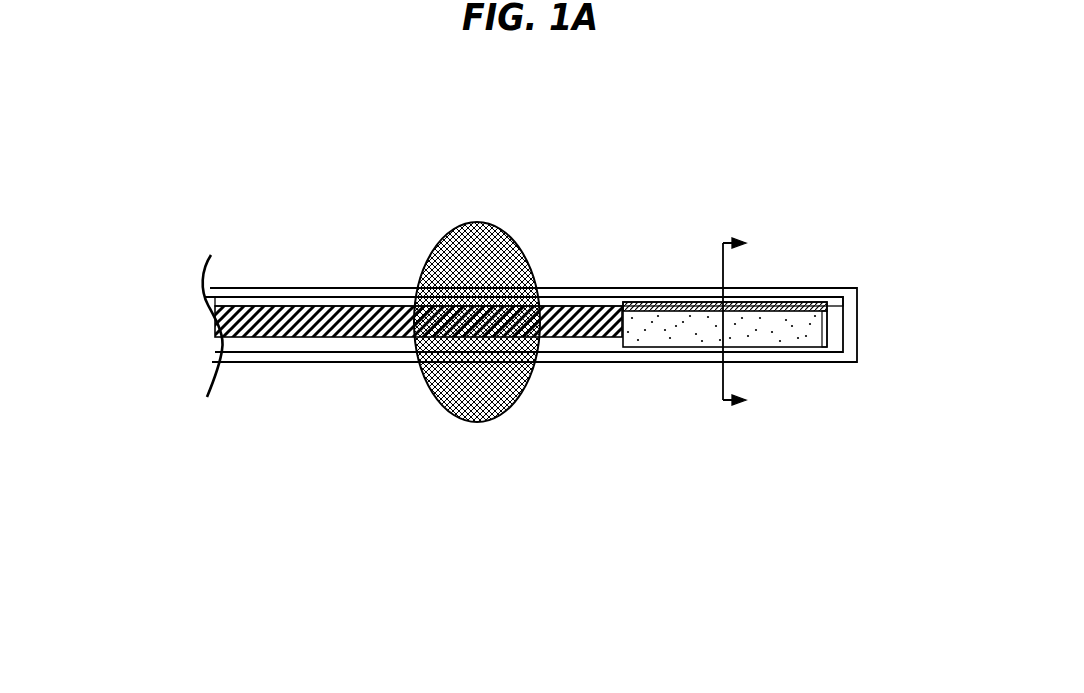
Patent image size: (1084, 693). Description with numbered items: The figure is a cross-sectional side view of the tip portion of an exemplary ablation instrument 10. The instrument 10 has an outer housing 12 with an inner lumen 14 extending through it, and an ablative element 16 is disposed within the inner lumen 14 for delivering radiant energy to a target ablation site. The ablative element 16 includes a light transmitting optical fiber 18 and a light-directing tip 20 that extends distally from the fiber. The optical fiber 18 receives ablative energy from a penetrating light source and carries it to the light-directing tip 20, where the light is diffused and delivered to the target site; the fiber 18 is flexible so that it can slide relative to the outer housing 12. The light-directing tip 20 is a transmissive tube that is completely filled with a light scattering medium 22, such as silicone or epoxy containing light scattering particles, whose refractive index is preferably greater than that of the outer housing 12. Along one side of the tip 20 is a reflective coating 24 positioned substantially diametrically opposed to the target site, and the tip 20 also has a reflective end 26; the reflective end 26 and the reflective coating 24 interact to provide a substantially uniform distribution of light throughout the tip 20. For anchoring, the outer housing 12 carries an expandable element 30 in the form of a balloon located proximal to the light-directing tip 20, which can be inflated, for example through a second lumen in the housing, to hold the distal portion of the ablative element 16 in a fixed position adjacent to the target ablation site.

The ablation instrument 10 is at (222, 141).
The outer housing 12 is at (301, 362).
The inner lumen 14 is at (248, 345).
The ablative element 16 is at (387, 337).
The light transmitting optical fiber 18 is at (340, 306).
The light-directing tip 20 is at (650, 347).
The light scattering medium 22 is at (777, 340).
The reflective coating 24 is at (800, 302).
The reflective end 26 is at (827, 333).
The expandable element 30 is at (472, 403).